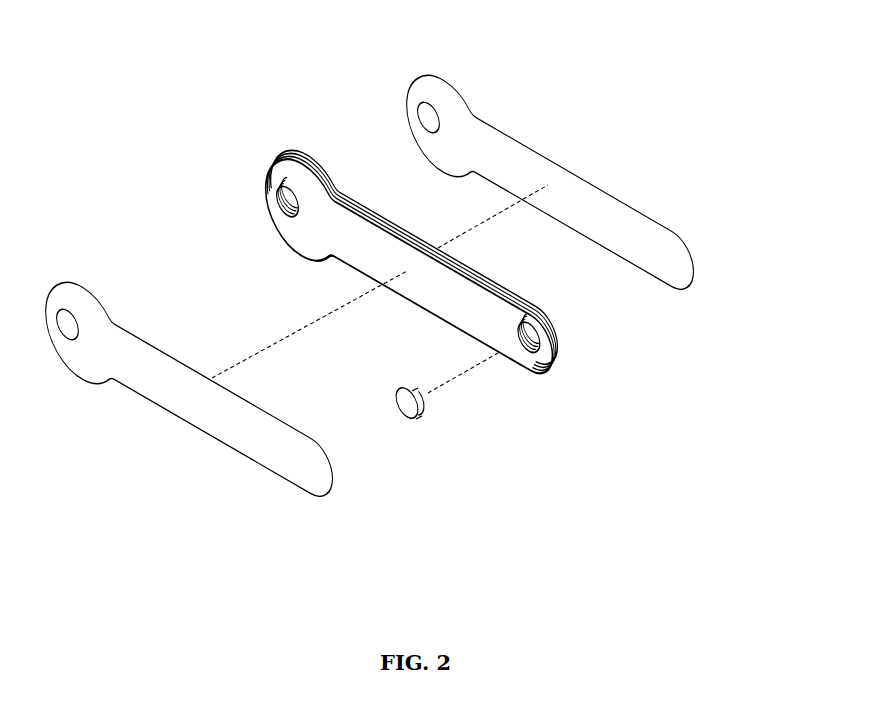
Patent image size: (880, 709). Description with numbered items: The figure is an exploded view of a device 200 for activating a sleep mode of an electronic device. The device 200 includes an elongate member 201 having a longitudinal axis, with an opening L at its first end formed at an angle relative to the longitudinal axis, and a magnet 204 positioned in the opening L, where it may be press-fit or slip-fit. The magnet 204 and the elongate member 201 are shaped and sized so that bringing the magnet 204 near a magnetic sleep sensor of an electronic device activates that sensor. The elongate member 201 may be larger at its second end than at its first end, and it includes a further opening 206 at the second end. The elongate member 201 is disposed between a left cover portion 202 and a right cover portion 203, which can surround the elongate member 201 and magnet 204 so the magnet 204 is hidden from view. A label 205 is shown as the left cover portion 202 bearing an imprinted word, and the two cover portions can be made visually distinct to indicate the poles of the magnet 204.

The device 200 is at (395, 329).
The elongate member 201 is at (472, 273).
The left cover portion 202 is at (183, 451).
The right cover portion 203 is at (690, 292).
The magnet 204 is at (423, 438).
The label 205 is at (99, 381).
The opening 206 is at (285, 178).
The opening L is at (540, 344).